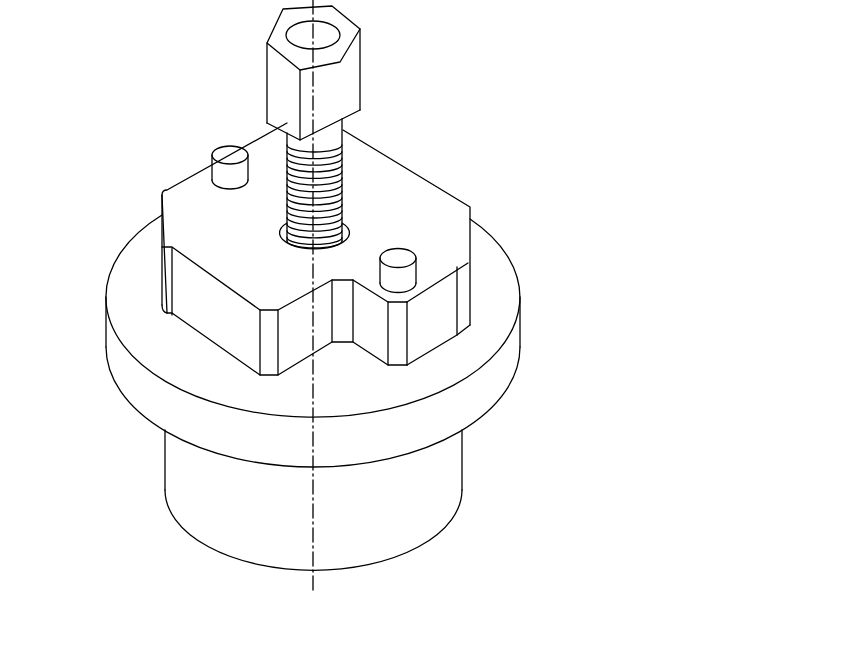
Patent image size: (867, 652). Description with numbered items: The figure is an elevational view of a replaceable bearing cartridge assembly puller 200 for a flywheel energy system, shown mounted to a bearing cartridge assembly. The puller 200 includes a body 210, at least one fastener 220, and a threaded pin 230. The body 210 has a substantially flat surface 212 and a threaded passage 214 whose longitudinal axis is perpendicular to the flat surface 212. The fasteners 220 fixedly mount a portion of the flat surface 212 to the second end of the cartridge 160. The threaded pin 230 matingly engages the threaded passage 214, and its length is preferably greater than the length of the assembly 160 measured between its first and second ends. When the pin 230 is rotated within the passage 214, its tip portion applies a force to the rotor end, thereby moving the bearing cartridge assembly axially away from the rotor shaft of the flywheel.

The bearing cartridge assembly puller 200 is at (583, 176).
The cartridge 160 is at (508, 344).
The body 210 is at (172, 210).
The flat surface 212 is at (376, 361).
The threaded passage 214 is at (330, 0).
The fastener 220 is at (229, 155).
The threaded pin 230 is at (343, 170).